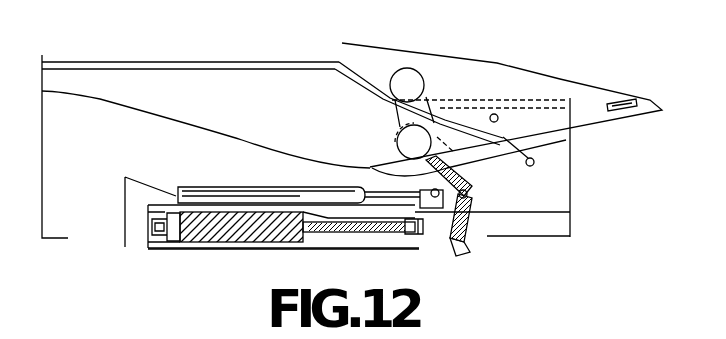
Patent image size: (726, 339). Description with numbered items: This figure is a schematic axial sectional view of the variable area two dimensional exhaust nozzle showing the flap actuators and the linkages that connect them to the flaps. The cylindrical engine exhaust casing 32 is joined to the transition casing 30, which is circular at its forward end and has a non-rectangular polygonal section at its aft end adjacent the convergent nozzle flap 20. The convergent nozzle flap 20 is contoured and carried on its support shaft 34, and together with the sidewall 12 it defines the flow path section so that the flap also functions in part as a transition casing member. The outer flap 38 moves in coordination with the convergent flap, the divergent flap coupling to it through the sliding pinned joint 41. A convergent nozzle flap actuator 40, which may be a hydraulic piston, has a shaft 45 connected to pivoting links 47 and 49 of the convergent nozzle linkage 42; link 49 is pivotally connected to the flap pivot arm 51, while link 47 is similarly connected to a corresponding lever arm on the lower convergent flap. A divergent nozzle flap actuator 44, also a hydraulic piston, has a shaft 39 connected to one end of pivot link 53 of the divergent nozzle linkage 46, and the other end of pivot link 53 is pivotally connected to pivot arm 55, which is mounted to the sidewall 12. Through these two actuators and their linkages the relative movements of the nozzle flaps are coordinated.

The sidewall 12 is at (537, 92).
The convergent nozzle flap 20 is at (445, 112).
The transition casing 30 is at (366, 72).
The cylindrical engine exhaust casing 32 is at (290, 62).
The support shaft 34 is at (431, 92).
The outer flap 38 is at (508, 62).
The shaft 39 is at (388, 200).
The convergent nozzle flap actuator 40 is at (212, 233).
The sliding pinned joint 41 is at (618, 111).
The convergent nozzle linkage 42 is at (467, 213).
The divergent nozzle flap actuator 44 is at (279, 185).
The shaft 45 is at (362, 229).
The divergent nozzle linkage 46 is at (543, 165).
The pivoting link 47 is at (455, 247).
The pivoting link 49 is at (467, 204).
The flap pivot arm 51 is at (375, 168).
The pivot link 53 is at (514, 178).
The pivot arm 55 is at (565, 150).